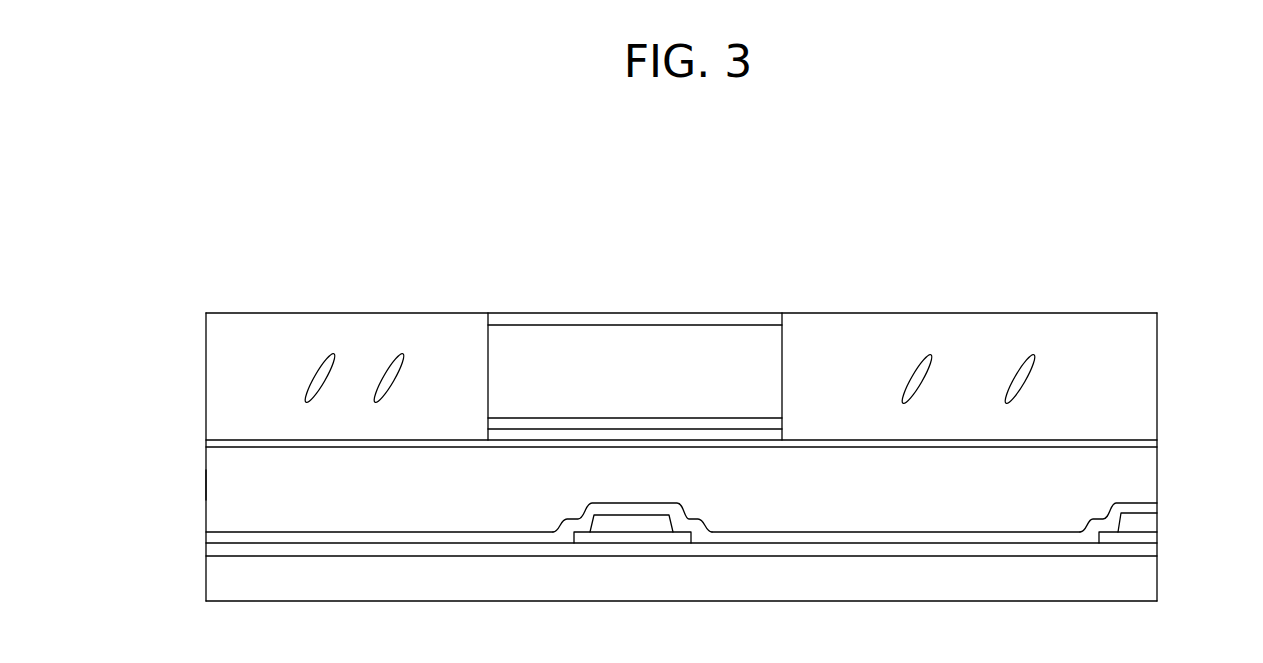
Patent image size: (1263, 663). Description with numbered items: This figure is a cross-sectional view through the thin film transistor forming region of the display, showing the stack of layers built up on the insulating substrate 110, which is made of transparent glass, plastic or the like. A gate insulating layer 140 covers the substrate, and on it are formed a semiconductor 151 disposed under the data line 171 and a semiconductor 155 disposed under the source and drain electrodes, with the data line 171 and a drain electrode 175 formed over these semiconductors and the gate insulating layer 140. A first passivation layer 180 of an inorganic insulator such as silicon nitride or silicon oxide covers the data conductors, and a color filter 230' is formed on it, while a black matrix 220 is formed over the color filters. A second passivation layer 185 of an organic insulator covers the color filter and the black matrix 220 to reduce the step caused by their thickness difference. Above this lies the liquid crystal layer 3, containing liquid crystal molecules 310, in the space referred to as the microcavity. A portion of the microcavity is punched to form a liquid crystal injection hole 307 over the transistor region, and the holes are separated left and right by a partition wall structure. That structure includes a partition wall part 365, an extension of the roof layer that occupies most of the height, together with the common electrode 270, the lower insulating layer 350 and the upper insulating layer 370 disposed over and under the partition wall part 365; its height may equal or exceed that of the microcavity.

The liquid crystal injection hole 307 is at (999, 292).
The liquid crystal layer 3 is at (263, 330).
The liquid crystal molecules 310 is at (323, 367).
The partition wall part 365 is at (603, 350).
The upper insulating layer 370 is at (557, 320).
The lower insulating layer 350 is at (660, 423).
The common electrode 270 is at (725, 433).
The second passivation layer 185 is at (1138, 445).
The black matrix 220 is at (1138, 473).
The color filter 230' is at (186, 489).
The first passivation layer 180 is at (1138, 508).
The drain electrode 175 is at (1138, 522).
The data line 171 is at (608, 522).
The semiconductor 151 is at (656, 537).
The semiconductor 155 is at (1138, 538).
The gate insulating layer 140 is at (1138, 548).
The insulating substrate 110 is at (792, 578).